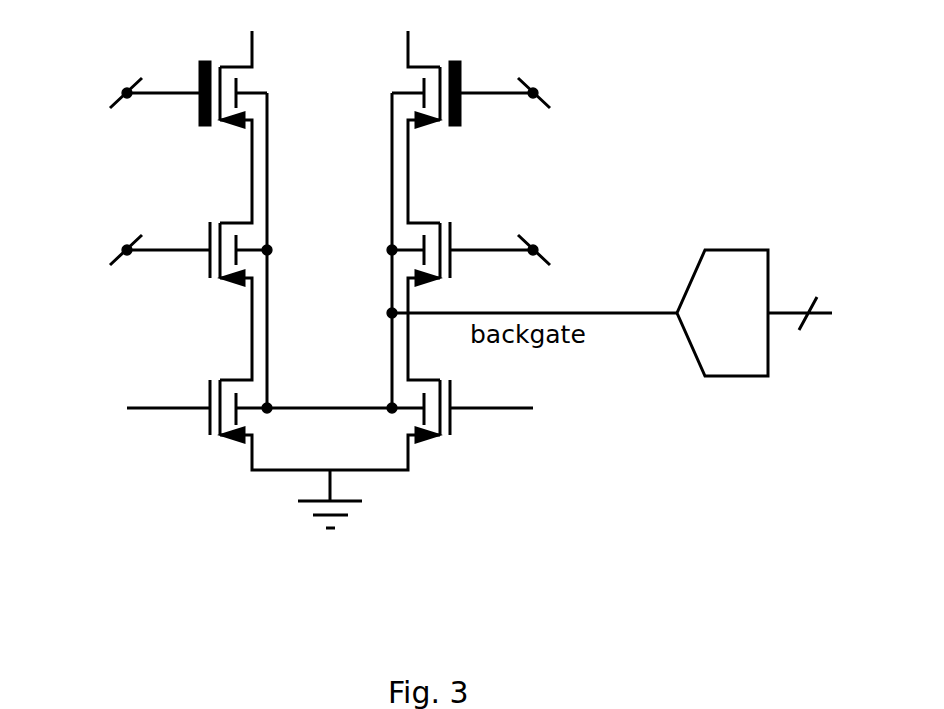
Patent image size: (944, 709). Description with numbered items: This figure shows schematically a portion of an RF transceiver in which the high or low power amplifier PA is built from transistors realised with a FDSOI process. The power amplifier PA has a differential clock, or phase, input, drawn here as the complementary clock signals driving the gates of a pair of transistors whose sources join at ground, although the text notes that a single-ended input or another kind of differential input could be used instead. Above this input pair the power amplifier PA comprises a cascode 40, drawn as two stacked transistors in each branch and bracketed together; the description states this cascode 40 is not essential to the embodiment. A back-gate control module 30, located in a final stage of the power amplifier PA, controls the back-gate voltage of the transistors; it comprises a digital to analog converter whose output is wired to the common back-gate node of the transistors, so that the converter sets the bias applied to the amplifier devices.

The backgate control module 30 is at (789, 214).
The cascode 40 is at (92, 48).
The power amplifier PA is at (150, 373).